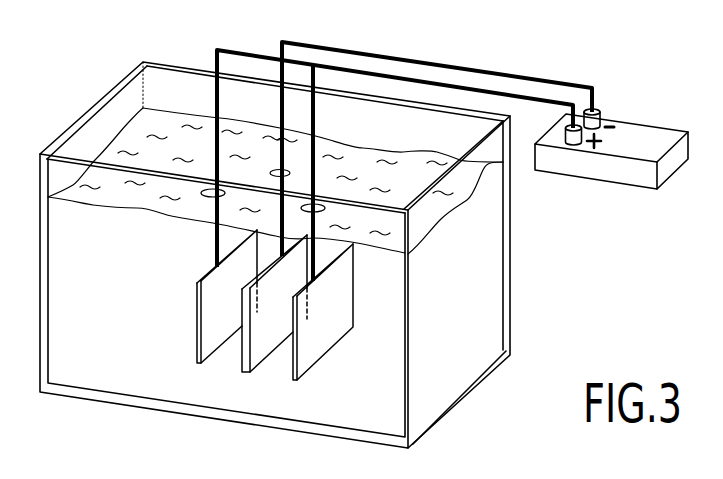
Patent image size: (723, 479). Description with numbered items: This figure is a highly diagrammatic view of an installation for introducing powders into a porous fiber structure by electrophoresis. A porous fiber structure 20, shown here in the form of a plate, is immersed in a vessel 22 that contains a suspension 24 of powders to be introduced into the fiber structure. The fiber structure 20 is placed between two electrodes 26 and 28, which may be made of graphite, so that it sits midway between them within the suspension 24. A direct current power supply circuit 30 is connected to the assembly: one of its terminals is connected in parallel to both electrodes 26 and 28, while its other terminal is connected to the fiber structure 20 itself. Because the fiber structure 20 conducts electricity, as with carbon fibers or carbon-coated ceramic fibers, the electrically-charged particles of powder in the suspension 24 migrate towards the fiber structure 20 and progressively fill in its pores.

The porous fiber structure 20 is at (263, 337).
The vessel 22 is at (40, 184).
The suspension 24 is at (141, 128).
The electrode 26 is at (209, 299).
The electrode 28 is at (320, 328).
The direct current power supply circuit 30 is at (668, 165).